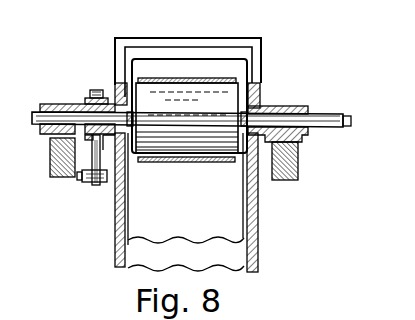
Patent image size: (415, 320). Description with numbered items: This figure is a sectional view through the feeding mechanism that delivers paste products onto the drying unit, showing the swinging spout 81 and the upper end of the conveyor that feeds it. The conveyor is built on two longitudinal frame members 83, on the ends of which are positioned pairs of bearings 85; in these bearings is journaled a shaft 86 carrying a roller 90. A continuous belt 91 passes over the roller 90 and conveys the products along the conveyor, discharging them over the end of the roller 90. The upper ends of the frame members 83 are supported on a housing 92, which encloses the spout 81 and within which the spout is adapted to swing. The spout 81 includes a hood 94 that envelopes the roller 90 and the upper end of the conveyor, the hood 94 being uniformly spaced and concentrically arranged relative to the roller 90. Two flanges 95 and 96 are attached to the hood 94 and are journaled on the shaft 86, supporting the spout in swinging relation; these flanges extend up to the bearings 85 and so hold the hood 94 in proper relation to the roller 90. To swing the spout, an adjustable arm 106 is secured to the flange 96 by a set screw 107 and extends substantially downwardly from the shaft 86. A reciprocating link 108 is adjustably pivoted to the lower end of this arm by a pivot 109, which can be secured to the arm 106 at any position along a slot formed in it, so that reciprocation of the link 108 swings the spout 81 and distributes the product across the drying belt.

The swinging spout 81 is at (231, 221).
The longitudinal frame members 83 is at (290, 166).
The bearings 85 is at (55, 104).
The shaft 86 is at (336, 128).
The roller 90 is at (186, 135).
The continuous belt 91 is at (214, 78).
The housing 92 is at (258, 246).
The hood 94 is at (190, 59).
The flange 95 is at (260, 92).
The flange 96 is at (116, 97).
The adjustable arm 106 is at (62, 147).
The set screw 107 is at (93, 90).
The reciprocating link 108 is at (101, 187).
The pivot 109 is at (93, 186).